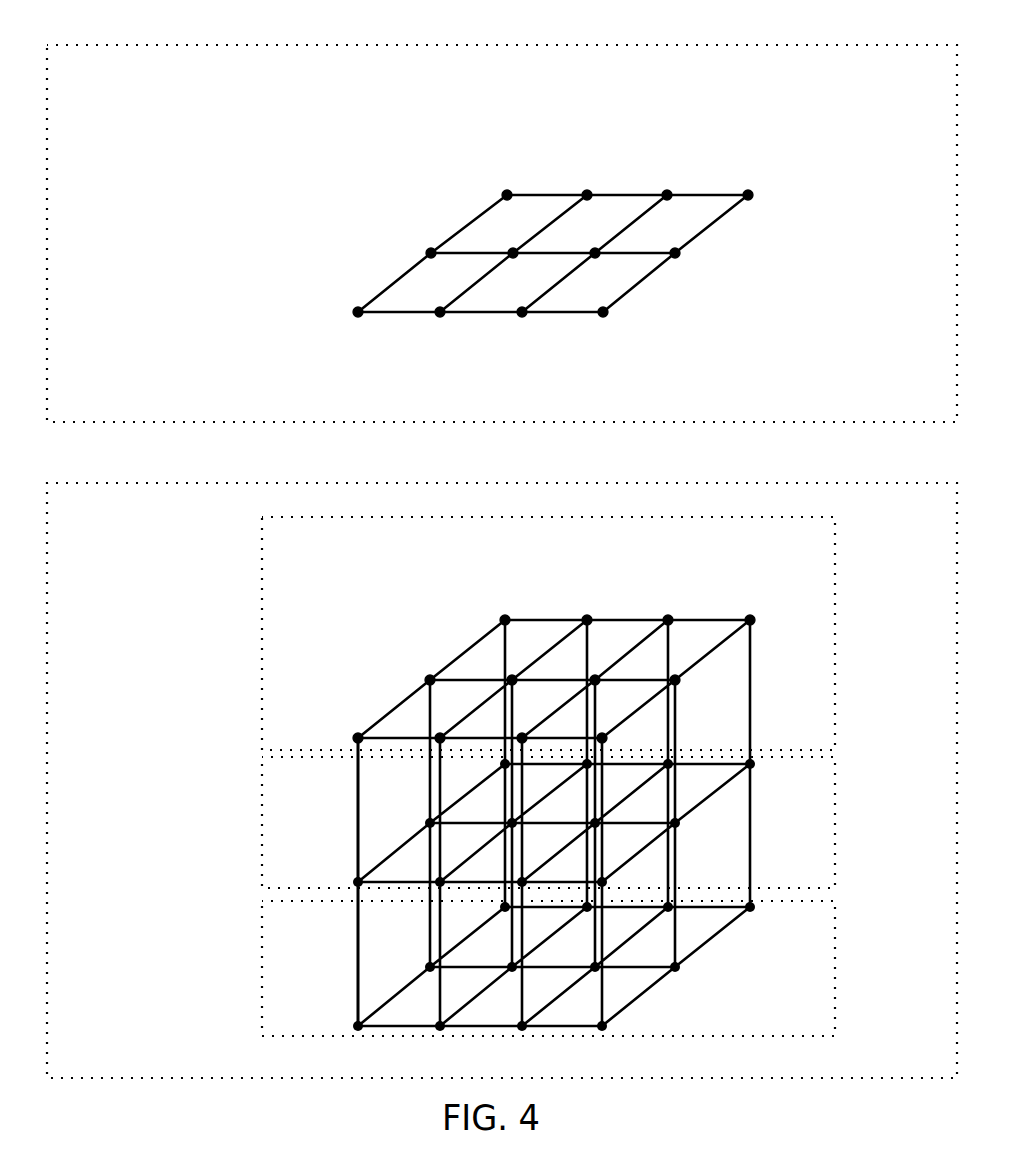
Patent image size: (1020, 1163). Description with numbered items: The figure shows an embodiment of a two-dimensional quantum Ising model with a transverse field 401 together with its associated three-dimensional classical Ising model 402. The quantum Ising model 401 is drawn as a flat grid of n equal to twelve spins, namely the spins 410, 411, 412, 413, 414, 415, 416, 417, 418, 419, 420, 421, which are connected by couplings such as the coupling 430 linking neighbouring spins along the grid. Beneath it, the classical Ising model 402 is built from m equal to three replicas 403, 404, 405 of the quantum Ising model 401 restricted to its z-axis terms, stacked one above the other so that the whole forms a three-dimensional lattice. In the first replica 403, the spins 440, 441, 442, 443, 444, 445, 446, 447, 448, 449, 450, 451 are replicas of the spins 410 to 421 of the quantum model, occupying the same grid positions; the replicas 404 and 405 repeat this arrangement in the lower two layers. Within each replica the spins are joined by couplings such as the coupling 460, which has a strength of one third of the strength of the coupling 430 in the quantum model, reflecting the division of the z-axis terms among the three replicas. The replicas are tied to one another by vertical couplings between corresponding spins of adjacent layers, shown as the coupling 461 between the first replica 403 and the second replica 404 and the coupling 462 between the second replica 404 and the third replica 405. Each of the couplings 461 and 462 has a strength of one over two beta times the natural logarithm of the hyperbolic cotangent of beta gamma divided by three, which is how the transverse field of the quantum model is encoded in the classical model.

The 2-dimensional quantum Ising model with transverse field 401 is at (720, 45).
The 3-dimensional classical Ising model 402 is at (735, 483).
The replica 403 is at (262, 635).
The replica 404 is at (262, 812).
The replica 405 is at (262, 950).
The spin 410 is at (748, 195).
The spin 411 is at (667, 195).
The spin 412 is at (675, 253).
The spin 413 is at (595, 253).
The spin 414 is at (603, 313).
The spin 415 is at (522, 312).
The spin 416 is at (587, 195).
The spin 417 is at (507, 195).
The spin 418 is at (513, 253).
The spin 419 is at (431, 253).
The spin 420 is at (440, 312).
The spin 421 is at (358, 312).
The coupling 430 is at (627, 195).
The spin 440 is at (750, 620).
The spin 441 is at (668, 620).
The spin 442 is at (675, 680).
The spin 443 is at (595, 680).
The spin 444 is at (602, 738).
The spin 445 is at (522, 738).
The spin 446 is at (587, 620).
The spin 447 is at (505, 620).
The spin 448 is at (512, 680).
The spin 449 is at (430, 680).
The spin 450 is at (440, 738).
The spin 451 is at (358, 738).
The coupling 460 is at (622, 620).
The coupling 461 is at (358, 790).
The coupling 462 is at (357, 913).